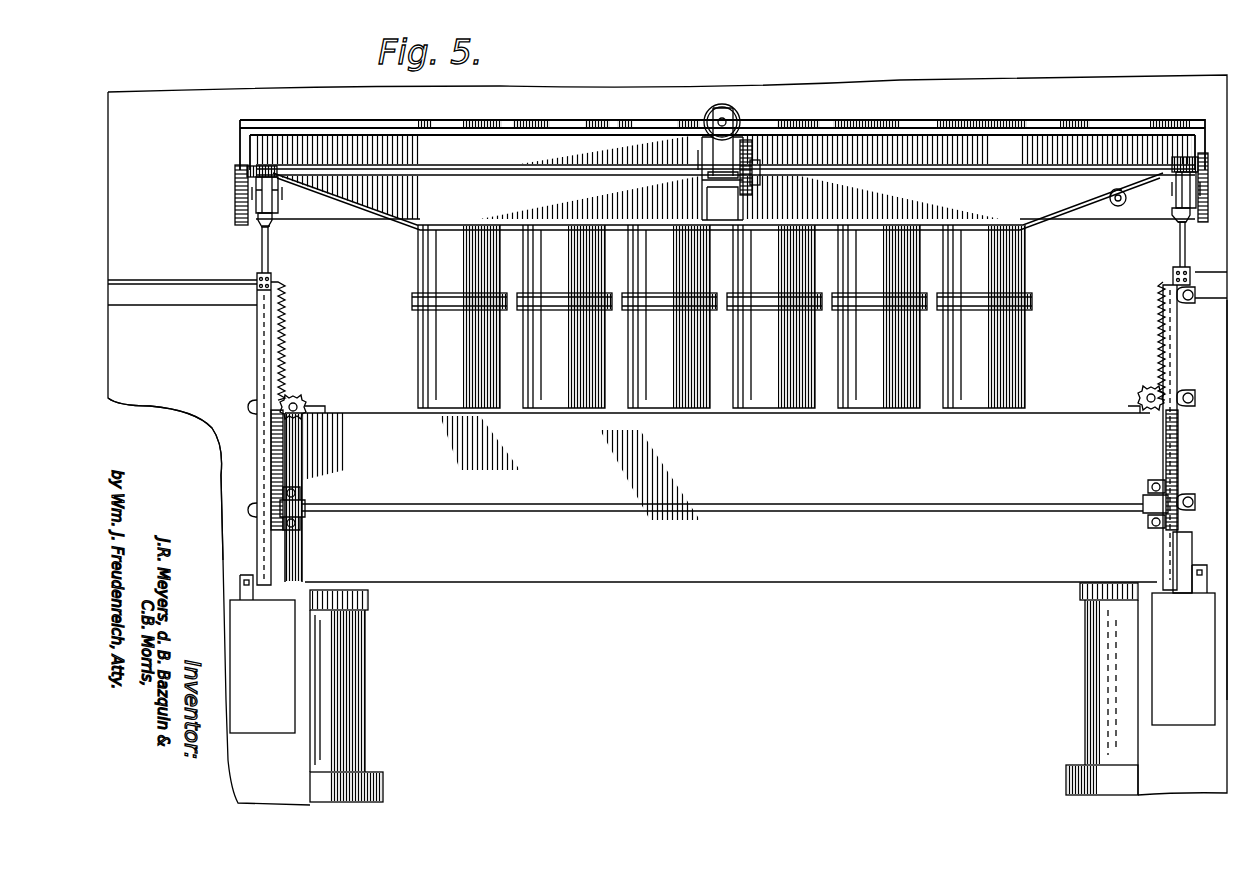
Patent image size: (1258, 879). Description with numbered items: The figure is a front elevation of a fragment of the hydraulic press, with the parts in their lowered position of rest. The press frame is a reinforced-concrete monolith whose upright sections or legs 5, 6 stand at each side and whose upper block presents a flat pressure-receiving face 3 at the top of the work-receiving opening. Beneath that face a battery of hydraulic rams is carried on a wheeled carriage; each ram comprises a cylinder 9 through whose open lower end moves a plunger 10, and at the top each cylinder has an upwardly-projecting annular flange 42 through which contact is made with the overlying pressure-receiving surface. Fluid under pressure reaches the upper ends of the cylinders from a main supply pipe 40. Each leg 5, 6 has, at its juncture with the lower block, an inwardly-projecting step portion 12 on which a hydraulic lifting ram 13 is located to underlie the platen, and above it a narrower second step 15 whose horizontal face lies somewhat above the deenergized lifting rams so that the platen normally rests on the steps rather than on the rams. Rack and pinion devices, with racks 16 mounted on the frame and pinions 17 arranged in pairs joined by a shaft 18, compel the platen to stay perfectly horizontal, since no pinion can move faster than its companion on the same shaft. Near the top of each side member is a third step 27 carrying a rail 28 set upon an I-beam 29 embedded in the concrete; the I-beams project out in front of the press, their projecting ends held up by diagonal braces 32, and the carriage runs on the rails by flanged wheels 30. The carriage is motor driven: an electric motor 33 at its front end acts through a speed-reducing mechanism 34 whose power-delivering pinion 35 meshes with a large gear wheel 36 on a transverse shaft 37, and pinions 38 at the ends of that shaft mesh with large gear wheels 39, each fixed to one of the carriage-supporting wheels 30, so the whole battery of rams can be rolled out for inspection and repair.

The pressure-receiving face 3 is at (932, 118).
The upright section 5 is at (222, 535).
The upright section 6 is at (1215, 464).
The cylinder 9 is at (548, 240).
The plunger 10 is at (722, 329).
The step portion 12 is at (368, 776).
The lifting ram 13 is at (366, 692).
The second step 15 is at (300, 592).
The rack 16 is at (284, 360).
The pinion 17 is at (299, 398).
The shaft 18 is at (306, 410).
The third step 27 is at (278, 226).
The rail 28 is at (265, 225).
The I-beam 29 is at (262, 256).
The flanged wheel 30 is at (279, 200).
The diagonal brace 32 is at (257, 356).
The electric motor 33 is at (742, 112).
The speed-reducing mechanism 34 is at (712, 122).
The pinion 35 is at (754, 152).
The gear wheel 36 is at (754, 185).
The transverse shaft 37 is at (918, 168).
The pinion 38 is at (246, 170).
The gear wheel 39 is at (240, 210).
The main supply pipe 40 is at (1114, 206).
The annular flange 42 is at (634, 124).